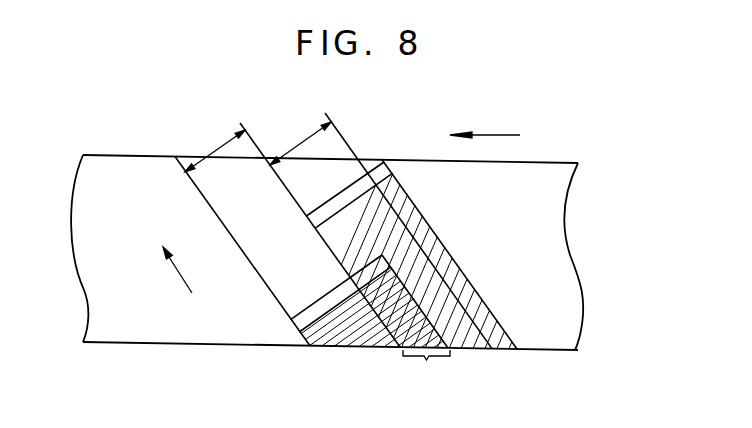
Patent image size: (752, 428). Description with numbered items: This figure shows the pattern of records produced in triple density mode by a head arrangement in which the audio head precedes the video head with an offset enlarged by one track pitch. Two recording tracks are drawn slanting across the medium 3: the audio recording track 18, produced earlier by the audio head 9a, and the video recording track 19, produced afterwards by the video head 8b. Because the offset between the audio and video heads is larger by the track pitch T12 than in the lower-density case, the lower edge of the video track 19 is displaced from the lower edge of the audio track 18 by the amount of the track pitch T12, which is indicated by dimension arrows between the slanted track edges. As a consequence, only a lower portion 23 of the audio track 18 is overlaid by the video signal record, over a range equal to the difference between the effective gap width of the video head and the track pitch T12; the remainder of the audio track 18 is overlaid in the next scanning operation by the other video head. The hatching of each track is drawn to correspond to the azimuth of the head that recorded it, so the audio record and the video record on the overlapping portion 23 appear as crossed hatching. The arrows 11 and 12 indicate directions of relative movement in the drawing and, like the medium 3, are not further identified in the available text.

The magnetic tape 3 is at (566, 243).
The video head 8b is at (334, 296).
The audio head 9a is at (380, 163).
The tape travel direction 11 is at (184, 285).
The head scanning direction 12 is at (498, 134).
The audio recording track 18 is at (393, 223).
The video recording track 19 is at (353, 334).
The lower portion of the audio track 23 is at (426, 371).
The track pitch T12 is at (258, 145).